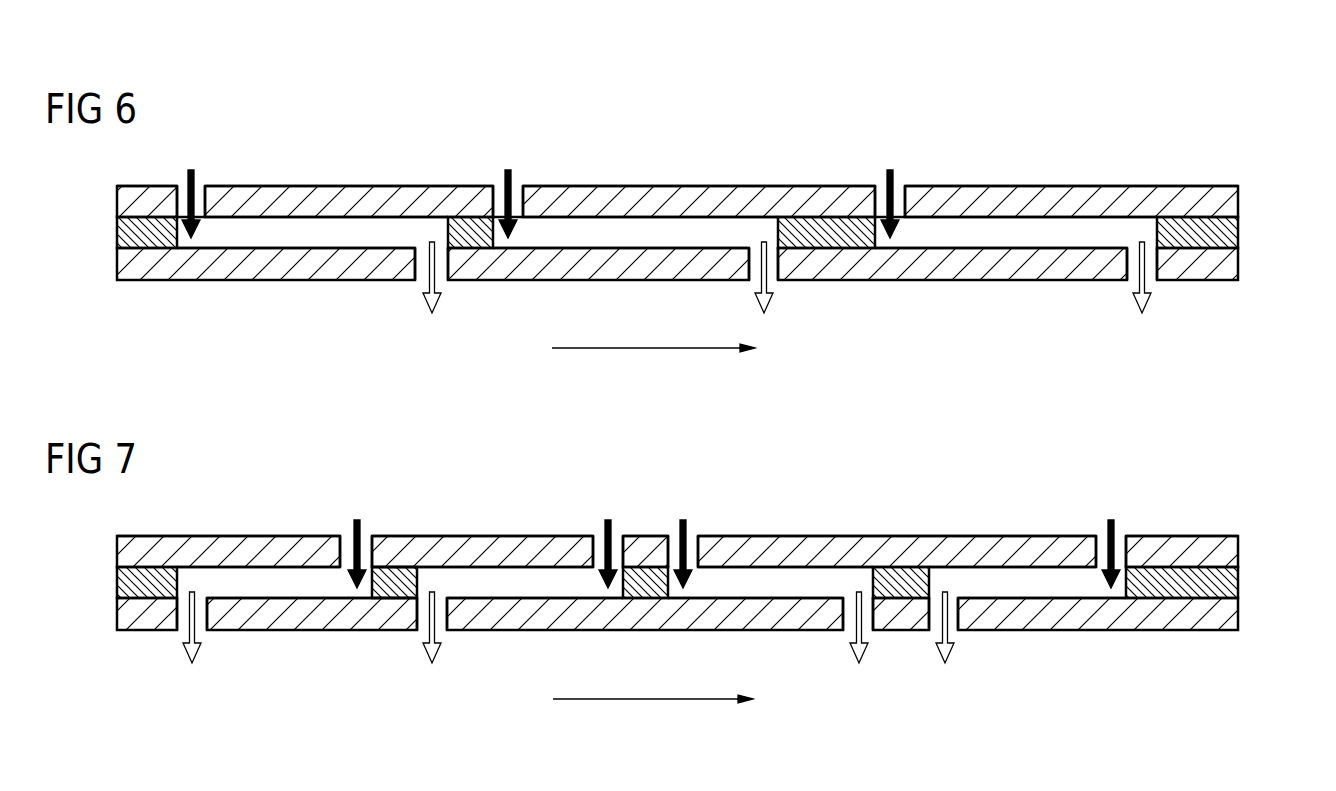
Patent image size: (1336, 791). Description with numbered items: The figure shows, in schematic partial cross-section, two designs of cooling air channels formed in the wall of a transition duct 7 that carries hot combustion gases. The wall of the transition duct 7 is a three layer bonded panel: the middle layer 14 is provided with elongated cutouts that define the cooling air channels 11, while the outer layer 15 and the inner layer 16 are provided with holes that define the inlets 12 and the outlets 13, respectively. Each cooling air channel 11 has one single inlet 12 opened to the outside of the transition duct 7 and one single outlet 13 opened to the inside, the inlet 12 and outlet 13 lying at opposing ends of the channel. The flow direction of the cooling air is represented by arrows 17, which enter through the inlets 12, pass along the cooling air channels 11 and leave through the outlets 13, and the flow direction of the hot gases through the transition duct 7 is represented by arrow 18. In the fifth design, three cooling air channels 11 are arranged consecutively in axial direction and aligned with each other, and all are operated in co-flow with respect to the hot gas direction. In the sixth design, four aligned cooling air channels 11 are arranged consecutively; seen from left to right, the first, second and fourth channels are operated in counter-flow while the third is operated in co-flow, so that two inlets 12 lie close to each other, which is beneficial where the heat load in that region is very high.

In FIG. 6, the transition duct 7 is at (1222, 184).
In FIG. 7, the transition duct 7 is at (1222, 534).
In FIG. 6, the cooling air channel 11 is at (400, 229).
In FIG. 7, the cooling air channel 11 is at (250, 580).
In FIG. 6, the inlet 12 is at (183, 193).
In FIG. 7, the inlet 12 is at (350, 543).
In FIG. 6, the outlet 13 is at (424, 270).
In FIG. 7, the outlet 13 is at (182, 632).
In FIG. 6, the middle layer 14 is at (1232, 238).
In FIG. 7, the middle layer 14 is at (1232, 588).
In FIG. 6, the outer layer 15 is at (1232, 202).
In FIG. 7, the outer layer 15 is at (1232, 552).
In FIG. 6, the inner layer 16 is at (1232, 270).
In FIG. 7, the inner layer 16 is at (1232, 620).
In FIG. 6, the arrows 17 is at (198, 178).
In FIG. 7, the arrows 17 is at (364, 528).
In FIG. 6, the arrow 18 is at (600, 348).
In FIG. 7, the arrow 18 is at (600, 699).